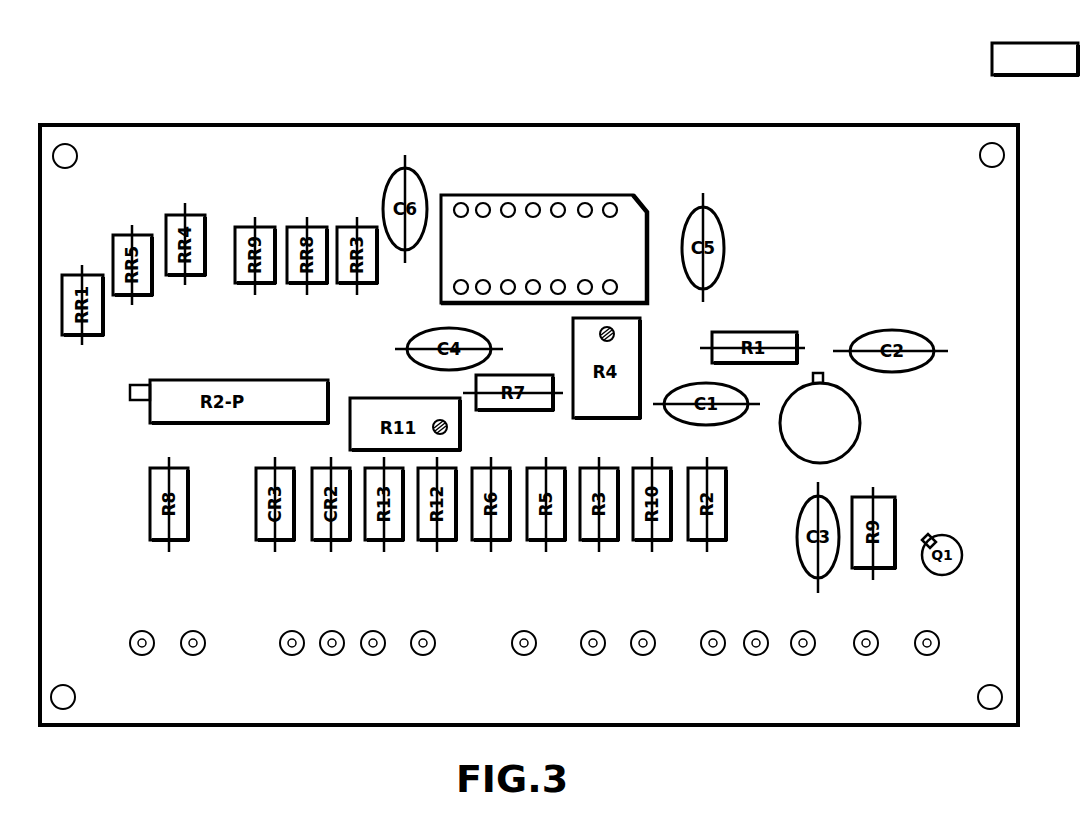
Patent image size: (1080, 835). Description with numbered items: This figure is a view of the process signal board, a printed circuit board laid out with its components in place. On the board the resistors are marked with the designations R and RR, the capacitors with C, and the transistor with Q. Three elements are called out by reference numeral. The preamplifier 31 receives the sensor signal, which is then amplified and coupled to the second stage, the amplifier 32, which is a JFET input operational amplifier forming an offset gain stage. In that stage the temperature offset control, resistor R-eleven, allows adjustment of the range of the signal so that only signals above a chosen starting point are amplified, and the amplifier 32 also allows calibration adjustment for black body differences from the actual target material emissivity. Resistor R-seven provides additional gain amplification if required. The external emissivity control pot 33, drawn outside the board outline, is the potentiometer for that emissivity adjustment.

The preamplifier 31 is at (861, 428).
The amplifier 32 is at (563, 195).
The external emissivity control pot 33 is at (1039, 76).